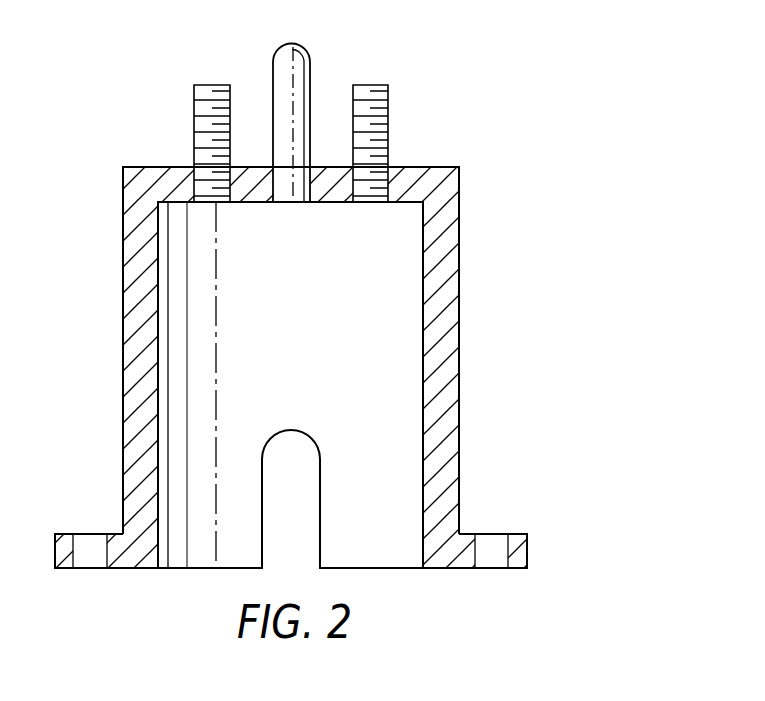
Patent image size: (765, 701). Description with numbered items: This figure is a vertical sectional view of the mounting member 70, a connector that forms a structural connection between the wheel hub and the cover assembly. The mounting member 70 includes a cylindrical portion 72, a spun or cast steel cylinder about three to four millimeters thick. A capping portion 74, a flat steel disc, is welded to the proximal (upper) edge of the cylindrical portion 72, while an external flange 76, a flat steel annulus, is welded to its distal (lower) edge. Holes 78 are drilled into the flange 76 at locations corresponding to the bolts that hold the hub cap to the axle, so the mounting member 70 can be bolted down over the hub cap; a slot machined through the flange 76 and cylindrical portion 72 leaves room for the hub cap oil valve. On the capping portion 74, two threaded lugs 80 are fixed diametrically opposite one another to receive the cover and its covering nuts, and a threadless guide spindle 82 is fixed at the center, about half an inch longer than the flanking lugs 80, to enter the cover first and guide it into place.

The mounting member 70 is at (572, 87).
The cylindrical portion 72 is at (458, 352).
The capping portion 74 is at (254, 165).
The external flange 76 is at (513, 534).
The holes 78 is at (90, 534).
The threaded lugs 80 is at (212, 85).
The guide spindle 82 is at (302, 47).